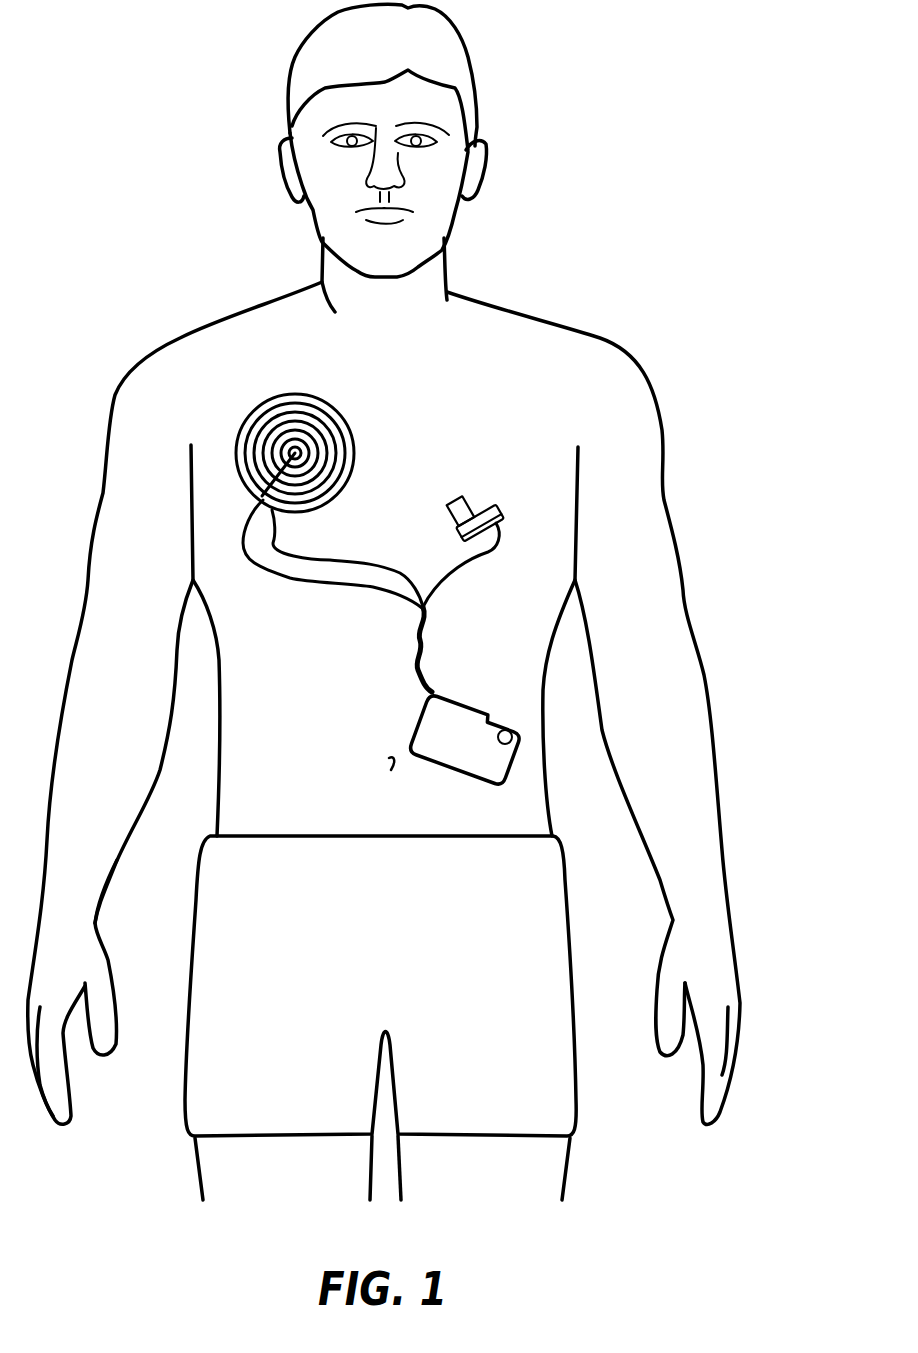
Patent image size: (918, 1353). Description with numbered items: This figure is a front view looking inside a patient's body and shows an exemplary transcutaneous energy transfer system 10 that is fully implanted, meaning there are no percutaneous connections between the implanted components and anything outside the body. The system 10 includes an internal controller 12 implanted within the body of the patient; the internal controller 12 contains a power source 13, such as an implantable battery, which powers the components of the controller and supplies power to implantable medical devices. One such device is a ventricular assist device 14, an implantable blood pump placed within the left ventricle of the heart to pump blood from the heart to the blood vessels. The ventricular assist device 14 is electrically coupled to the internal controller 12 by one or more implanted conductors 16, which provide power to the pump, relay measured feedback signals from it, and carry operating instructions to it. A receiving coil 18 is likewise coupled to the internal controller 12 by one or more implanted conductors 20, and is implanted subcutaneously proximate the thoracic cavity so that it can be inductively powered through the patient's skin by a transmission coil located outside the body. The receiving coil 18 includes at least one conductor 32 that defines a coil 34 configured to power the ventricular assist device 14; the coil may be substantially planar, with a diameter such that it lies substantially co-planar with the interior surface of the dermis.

The transcutaneous energy transfer system 10 is at (476, 448).
The internal controller 12 is at (462, 752).
The power source 13 is at (513, 737).
The ventricular assist device 14 is at (500, 506).
The implanted conductors 16 is at (450, 583).
The receiving coil 18 is at (277, 381).
The implanted conductors 20 is at (317, 580).
The conductor 32 is at (328, 405).
The coil 34 is at (290, 392).